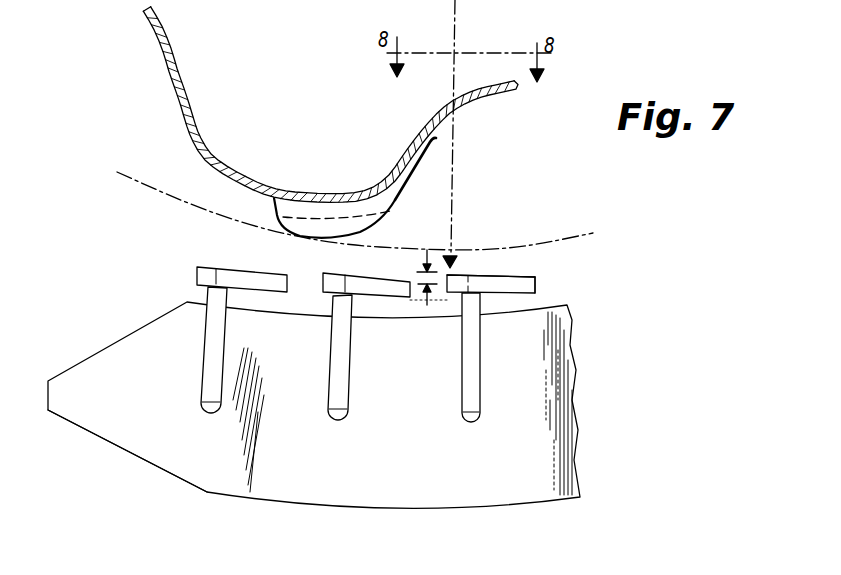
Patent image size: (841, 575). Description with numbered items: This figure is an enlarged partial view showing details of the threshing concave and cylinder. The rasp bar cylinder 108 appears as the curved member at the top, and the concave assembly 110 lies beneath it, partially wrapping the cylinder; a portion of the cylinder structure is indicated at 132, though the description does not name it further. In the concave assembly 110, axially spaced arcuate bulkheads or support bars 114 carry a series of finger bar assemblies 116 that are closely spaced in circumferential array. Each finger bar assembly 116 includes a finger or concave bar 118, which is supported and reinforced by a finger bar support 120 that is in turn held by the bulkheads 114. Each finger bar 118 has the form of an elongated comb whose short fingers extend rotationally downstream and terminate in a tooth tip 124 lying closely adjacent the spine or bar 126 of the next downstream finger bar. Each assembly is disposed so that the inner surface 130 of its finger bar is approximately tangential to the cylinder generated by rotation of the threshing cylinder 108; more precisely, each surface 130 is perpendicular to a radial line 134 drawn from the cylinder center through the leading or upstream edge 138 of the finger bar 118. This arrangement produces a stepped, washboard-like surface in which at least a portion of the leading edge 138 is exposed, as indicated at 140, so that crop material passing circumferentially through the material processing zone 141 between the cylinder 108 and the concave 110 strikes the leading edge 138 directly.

The rasp bar cylinder 108 is at (151, 58).
The concave assembly 110 is at (110, 315).
The support bars 114 is at (127, 452).
The finger bar assembly 116 is at (522, 258).
The finger bar 118 is at (550, 265).
The finger bar support 120 is at (477, 417).
The tooth tip 124 is at (537, 286).
The spine 126 is at (463, 275).
The inner surface 130 is at (492, 275).
The inner liner 132 is at (270, 197).
The radial line 134 is at (460, 13).
The leading edge 138 is at (450, 294).
The exposed portion of leading edge 140 is at (427, 305).
The material processing zone 141 is at (468, 171).